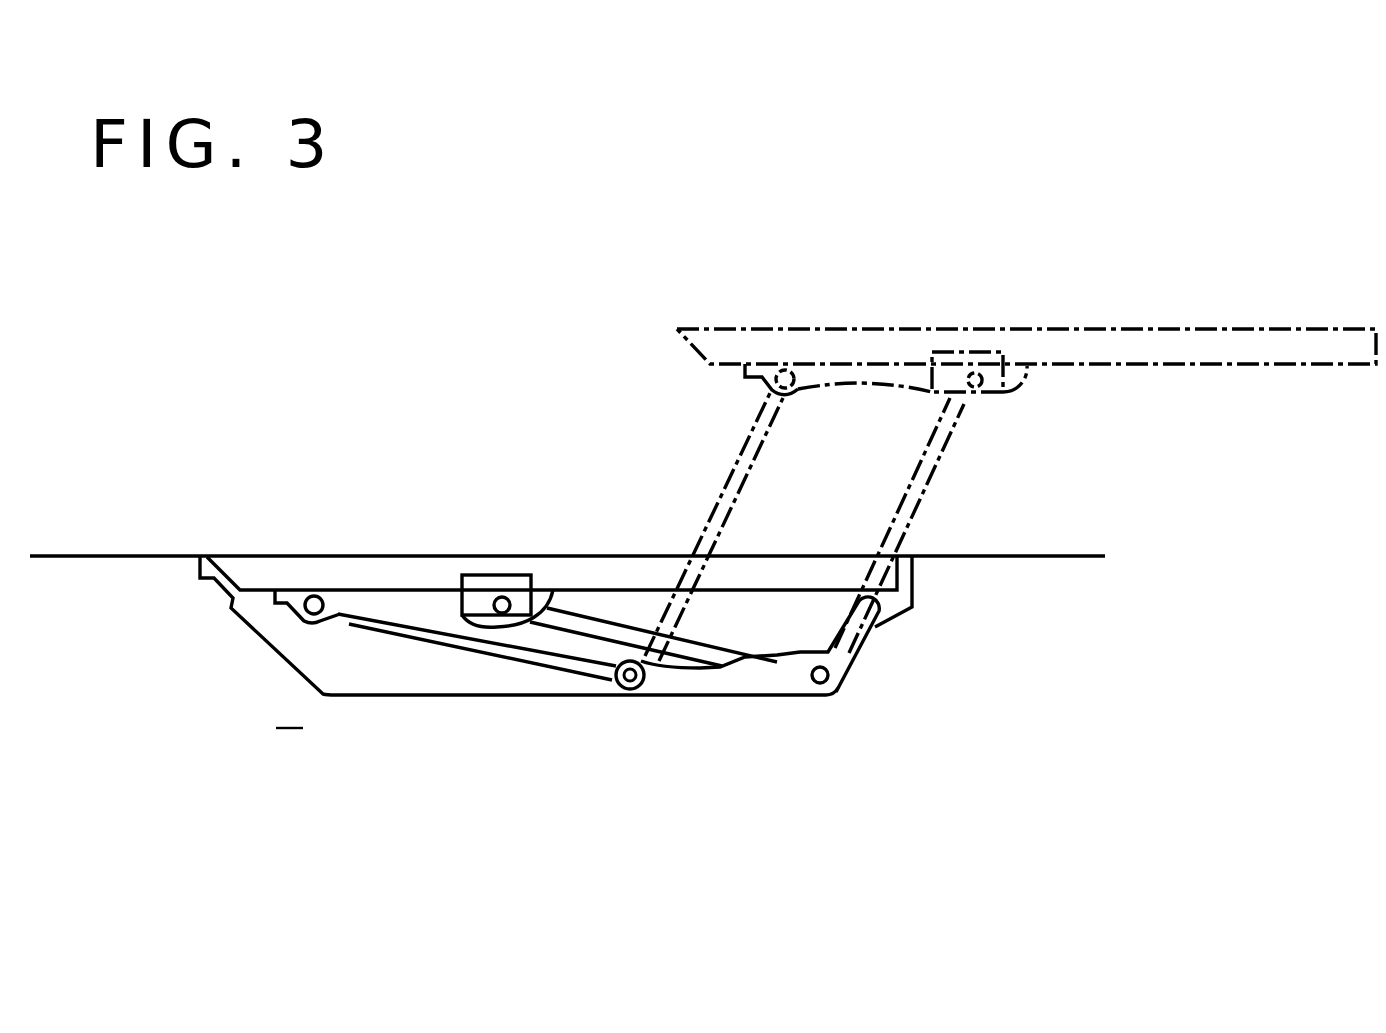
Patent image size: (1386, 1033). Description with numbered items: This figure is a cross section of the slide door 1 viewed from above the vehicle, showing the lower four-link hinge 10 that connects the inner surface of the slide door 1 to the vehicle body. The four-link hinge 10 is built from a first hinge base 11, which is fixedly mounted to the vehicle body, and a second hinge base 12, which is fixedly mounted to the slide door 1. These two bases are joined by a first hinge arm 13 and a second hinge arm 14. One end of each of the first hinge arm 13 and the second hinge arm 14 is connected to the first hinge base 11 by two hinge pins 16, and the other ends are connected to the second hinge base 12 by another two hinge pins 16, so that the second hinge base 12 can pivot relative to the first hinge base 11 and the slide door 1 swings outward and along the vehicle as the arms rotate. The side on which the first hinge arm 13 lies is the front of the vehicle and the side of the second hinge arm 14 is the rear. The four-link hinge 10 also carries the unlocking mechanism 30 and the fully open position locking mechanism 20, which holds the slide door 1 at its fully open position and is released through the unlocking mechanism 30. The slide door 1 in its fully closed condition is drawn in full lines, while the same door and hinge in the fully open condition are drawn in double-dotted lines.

The slide door 1 is at (336, 548).
The four-link hinge 10 is at (772, 709).
The first hinge base 11 is at (702, 683).
The second hinge base 12 is at (373, 592).
The first hinge arm 13 is at (493, 648).
The second hinge arm 14 is at (583, 625).
The hinge pin 16 is at (307, 595).
The fully open position locking mechanism 20 is at (467, 577).
The unlocking mechanism 30 is at (745, 447).